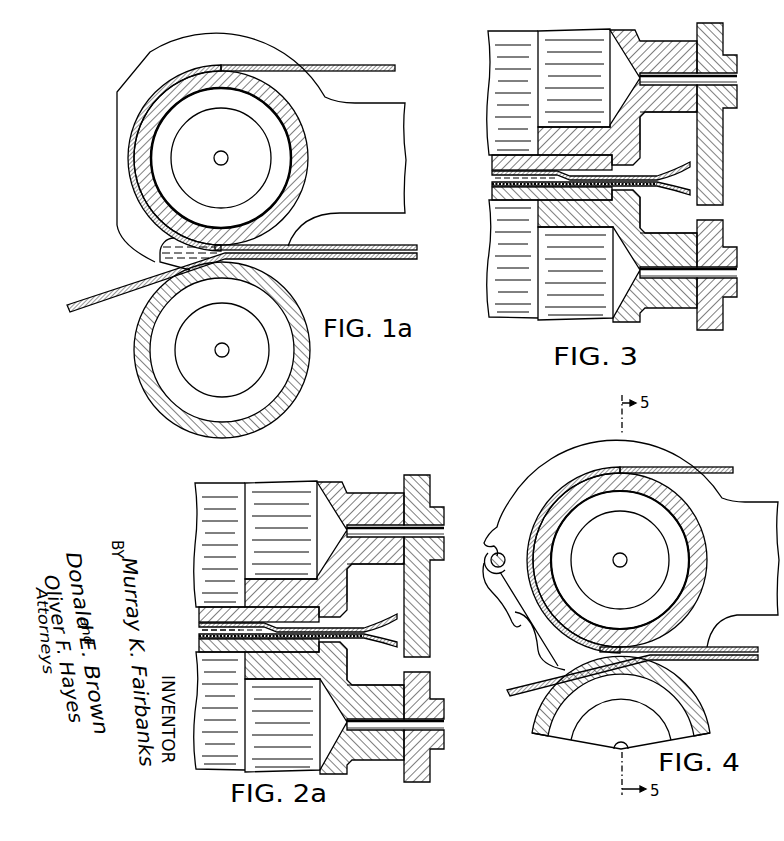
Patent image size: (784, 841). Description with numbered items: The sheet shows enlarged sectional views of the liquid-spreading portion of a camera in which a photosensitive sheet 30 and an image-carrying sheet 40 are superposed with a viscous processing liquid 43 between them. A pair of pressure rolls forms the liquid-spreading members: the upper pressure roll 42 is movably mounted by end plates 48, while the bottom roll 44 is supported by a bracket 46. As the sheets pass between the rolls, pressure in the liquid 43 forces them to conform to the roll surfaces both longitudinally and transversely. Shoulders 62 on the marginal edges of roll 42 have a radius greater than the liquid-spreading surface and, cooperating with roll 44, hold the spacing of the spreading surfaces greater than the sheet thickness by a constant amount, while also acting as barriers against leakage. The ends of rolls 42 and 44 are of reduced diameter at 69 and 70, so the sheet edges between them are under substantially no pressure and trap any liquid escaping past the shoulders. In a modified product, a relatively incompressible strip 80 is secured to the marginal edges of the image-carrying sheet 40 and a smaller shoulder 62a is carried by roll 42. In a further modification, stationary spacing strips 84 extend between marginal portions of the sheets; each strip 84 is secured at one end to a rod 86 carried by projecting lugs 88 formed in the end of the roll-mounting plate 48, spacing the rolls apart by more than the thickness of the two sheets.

In FIG. 1A, the photosensitive sheet 30 is at (335, 70).
In FIG. 3, the photosensitive sheet 30 is at (490, 172).
In FIG. 2A, the photosensitive sheet 30 is at (385, 620).
In FIG. 4, the photosensitive sheet 30 is at (725, 467).
In FIG. 1A, the image-carrying sheet 40 is at (388, 260).
In FIG. 3, the image-carrying sheet 40 is at (490, 186).
In FIG. 2A, the image-carrying sheet 40 is at (345, 641).
In FIG. 4, the image-carrying sheet 40 is at (733, 661).
In FIG. 1A, the upper pressure roll 42 is at (300, 135).
In FIG. 3, the upper pressure roll 42 is at (522, 158).
In FIG. 2A, the upper pressure roll 42 is at (238, 610).
In FIG. 4, the upper pressure roll 42 is at (700, 548).
In FIG. 1A, the liquid 43 is at (157, 250).
In FIG. 2A, the liquid 43 is at (200, 630).
In FIG. 1A, the bottom roll 44 is at (300, 380).
In FIG. 3, the bottom roll 44 is at (500, 195).
In FIG. 2A, the bottom roll 44 is at (210, 648).
In FIG. 4, the bottom roll 44 is at (700, 718).
In FIG. 3, the bracket 46 is at (722, 318).
In FIG. 2A, the bracket 46 is at (430, 772).
In FIG. 1A, the end plates 48 is at (150, 68).
In FIG. 3, the end plates 48 is at (722, 142).
In FIG. 2A, the end plates 48 is at (423, 484).
In FIG. 4, the end plates 48 is at (578, 450).
In FIG. 1A, the shoulders 62 is at (295, 160).
In FIG. 2A, the shoulders 62 is at (293, 605).
In FIG. 3, the shoulder 62a is at (595, 165).
In FIG. 3, the reduced diameter portion 69 is at (650, 112).
In FIG. 2A, the reduced diameter portion 69 is at (357, 564).
In FIG. 3, the reduced diameter portion 70 is at (680, 230).
In FIG. 2A, the reduced diameter portion 70 is at (390, 760).
In FIG. 3, the strip 80 is at (570, 205).
In FIG. 4, the spacing strips 84 is at (533, 635).
In FIG. 4, the rod 86 is at (511, 616).
In FIG. 4, the projecting lugs 88 is at (490, 530).